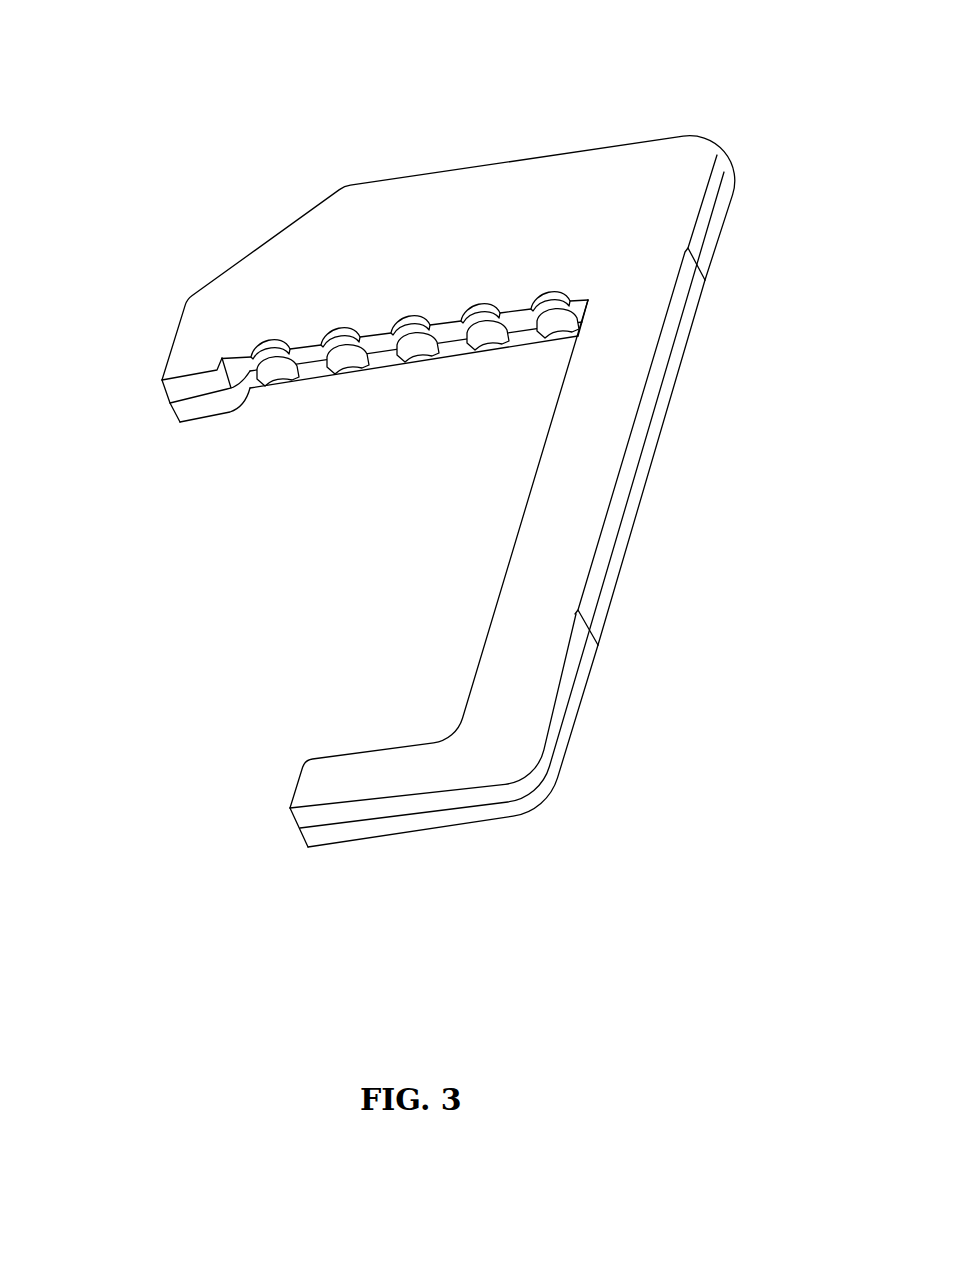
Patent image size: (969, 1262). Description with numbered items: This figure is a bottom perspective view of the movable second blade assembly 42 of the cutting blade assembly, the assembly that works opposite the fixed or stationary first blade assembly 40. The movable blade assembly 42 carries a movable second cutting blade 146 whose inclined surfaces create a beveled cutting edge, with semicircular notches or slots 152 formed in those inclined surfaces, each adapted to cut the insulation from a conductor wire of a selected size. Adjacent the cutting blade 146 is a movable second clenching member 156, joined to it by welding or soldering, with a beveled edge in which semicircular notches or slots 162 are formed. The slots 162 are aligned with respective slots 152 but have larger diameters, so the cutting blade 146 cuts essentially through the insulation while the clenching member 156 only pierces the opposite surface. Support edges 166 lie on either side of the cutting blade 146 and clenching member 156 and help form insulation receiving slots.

The movable second blade assembly 42 is at (617, 88).
The fixed first blade assembly 40 is at (358, 832).
The movable second cutting blade 146 is at (250, 382).
The movable second clenching member 156 is at (238, 366).
The semicircular notches or slots 152 is at (490, 348).
The support edges 166 is at (273, 333).
The semicircular notches or slots 162 is at (407, 317).